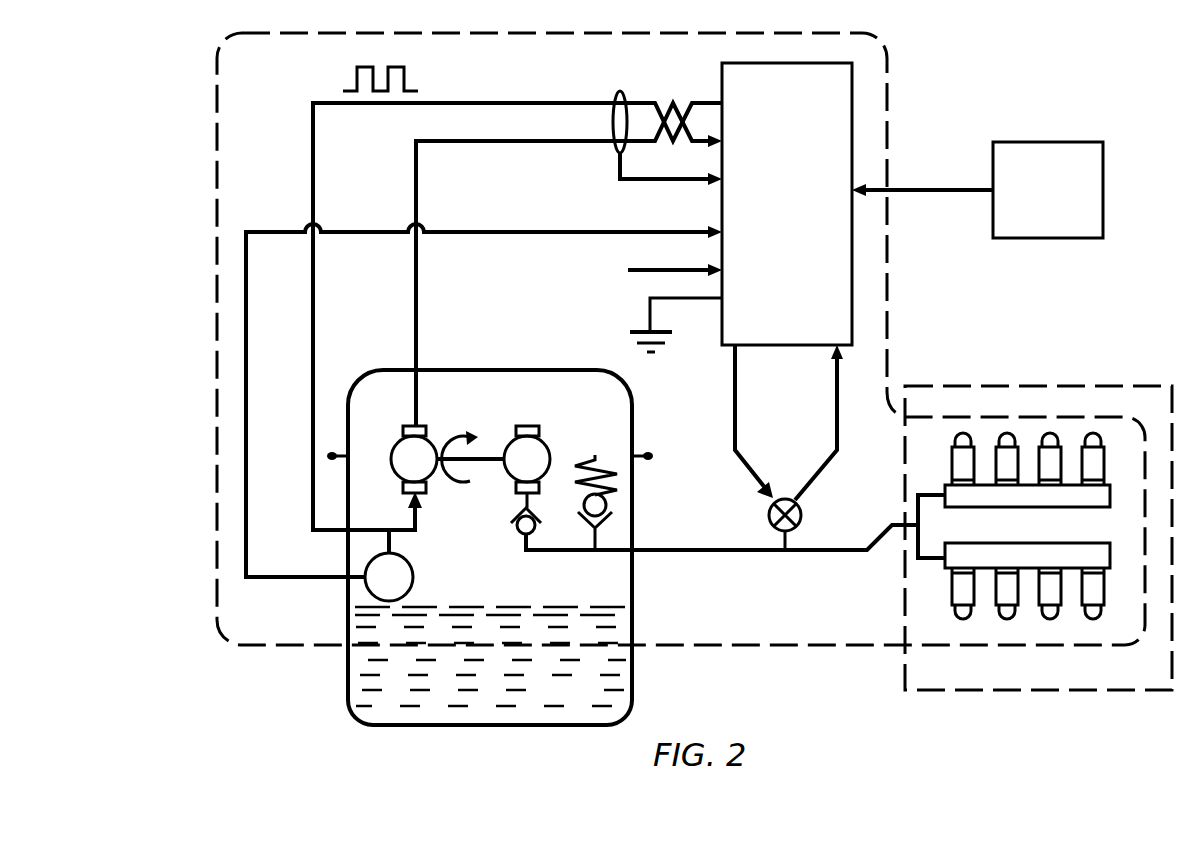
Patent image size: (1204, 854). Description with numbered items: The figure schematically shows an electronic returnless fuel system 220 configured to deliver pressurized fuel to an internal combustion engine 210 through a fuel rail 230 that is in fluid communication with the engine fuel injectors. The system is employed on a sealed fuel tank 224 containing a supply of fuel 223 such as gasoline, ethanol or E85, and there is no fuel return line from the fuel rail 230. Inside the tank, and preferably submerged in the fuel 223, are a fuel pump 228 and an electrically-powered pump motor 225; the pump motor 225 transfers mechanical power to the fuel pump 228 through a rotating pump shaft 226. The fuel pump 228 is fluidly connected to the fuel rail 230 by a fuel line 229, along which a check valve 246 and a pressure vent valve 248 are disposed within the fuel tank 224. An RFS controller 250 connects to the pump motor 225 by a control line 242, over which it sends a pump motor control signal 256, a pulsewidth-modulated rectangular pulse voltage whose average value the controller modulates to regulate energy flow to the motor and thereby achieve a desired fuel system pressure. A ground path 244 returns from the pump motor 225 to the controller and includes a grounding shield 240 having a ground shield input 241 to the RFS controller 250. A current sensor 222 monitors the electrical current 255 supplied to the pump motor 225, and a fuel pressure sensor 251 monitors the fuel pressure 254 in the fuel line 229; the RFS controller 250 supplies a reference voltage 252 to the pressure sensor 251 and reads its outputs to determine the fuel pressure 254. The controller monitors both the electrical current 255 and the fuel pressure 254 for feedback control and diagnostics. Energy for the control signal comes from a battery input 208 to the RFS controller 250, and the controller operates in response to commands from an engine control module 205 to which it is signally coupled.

The engine control module 205 is at (1067, 200).
The battery input 208 is at (648, 270).
The internal combustion engine 210 is at (1160, 675).
The electronic returnless fuel system 220 is at (217, 115).
The current sensor 222 is at (408, 587).
The fuel 223 is at (585, 702).
The fuel tank 224 is at (348, 693).
The pump motor 225 is at (433, 469).
The pump shaft 226 is at (488, 458).
The fuel pump 228 is at (546, 469).
The fuel line 229 is at (712, 550).
The fuel rail 230 is at (1049, 535).
The grounding shield 240 is at (617, 120).
The ground shield input 241 is at (635, 181).
The control line 242 is at (500, 103).
The ground path 244 is at (428, 141).
The check valve 246 is at (516, 527).
The pressure vent valve 248 is at (614, 452).
The RFS controller 250 is at (807, 208).
The fuel pressure sensor 251 is at (803, 515).
The reference voltage 252 is at (730, 395).
The fuel pressure 254 is at (834, 417).
The electrical current 255 is at (289, 225).
The pump motor control signal 256 is at (347, 85).